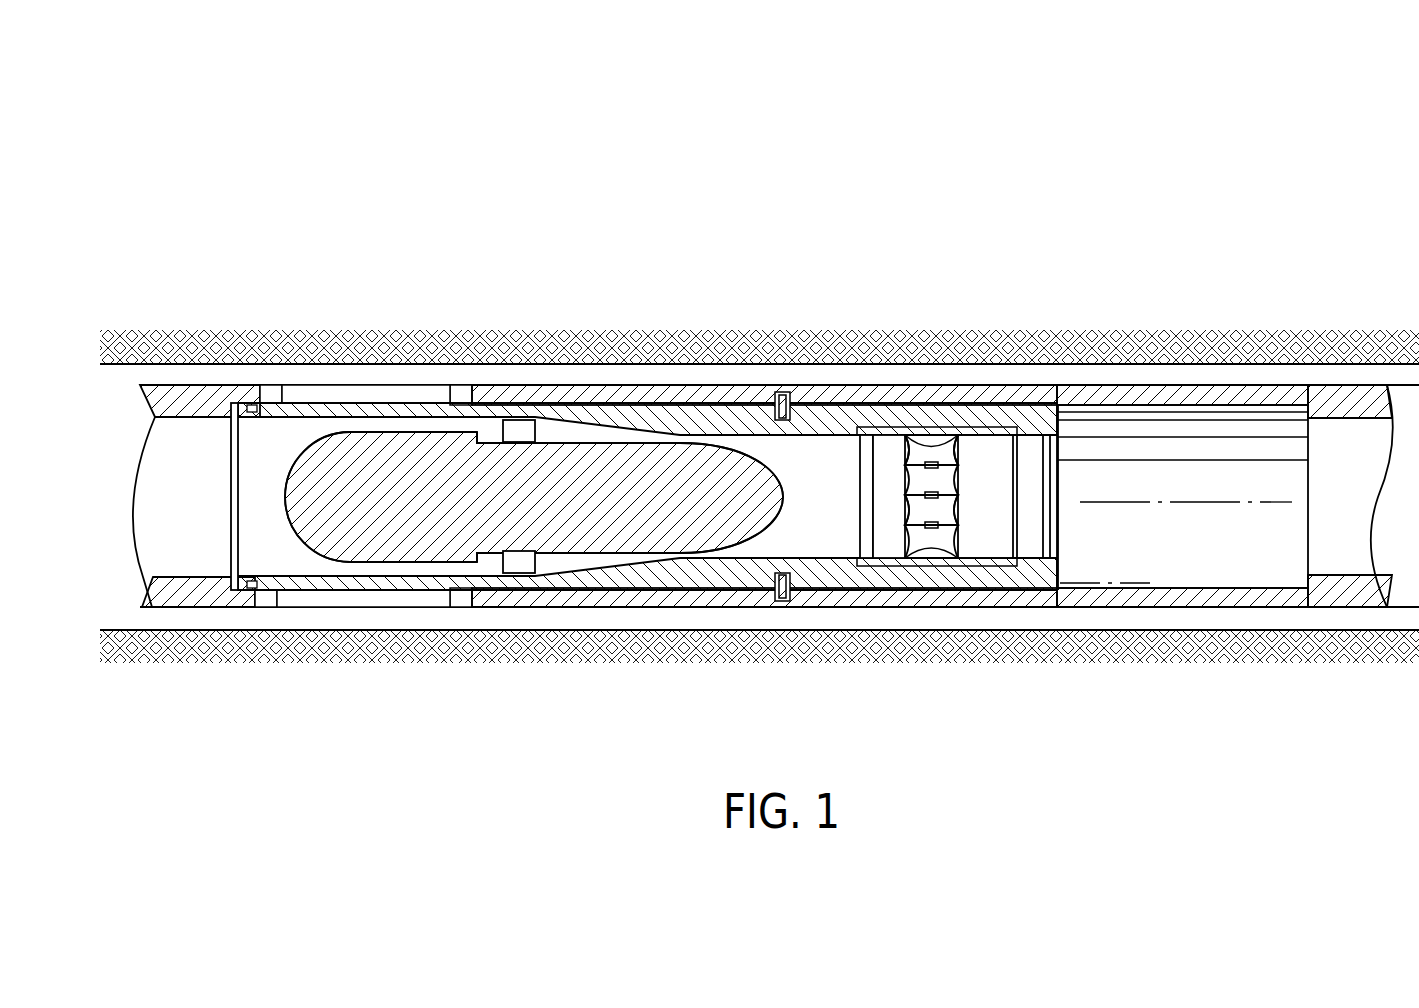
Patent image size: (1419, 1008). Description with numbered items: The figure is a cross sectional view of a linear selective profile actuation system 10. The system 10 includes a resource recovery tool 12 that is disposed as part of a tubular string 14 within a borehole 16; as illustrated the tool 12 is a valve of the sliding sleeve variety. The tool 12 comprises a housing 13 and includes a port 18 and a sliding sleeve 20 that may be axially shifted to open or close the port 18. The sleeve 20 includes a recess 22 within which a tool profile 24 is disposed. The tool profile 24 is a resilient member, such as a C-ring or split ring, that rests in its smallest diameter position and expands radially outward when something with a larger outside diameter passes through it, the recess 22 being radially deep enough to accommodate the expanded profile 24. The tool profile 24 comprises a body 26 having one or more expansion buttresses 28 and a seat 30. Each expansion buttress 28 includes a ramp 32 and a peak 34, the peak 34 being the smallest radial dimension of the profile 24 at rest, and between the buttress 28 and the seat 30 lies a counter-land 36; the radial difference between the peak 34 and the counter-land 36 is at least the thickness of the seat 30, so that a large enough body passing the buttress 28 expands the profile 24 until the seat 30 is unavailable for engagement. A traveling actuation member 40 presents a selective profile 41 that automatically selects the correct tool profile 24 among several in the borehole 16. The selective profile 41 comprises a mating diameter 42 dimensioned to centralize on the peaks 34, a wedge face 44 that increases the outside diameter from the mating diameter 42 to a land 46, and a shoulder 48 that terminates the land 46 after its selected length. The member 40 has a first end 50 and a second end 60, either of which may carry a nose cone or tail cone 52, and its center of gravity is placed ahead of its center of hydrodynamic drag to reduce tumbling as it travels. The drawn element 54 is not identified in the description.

The linear selective profile actuation system 10 is at (1150, 205).
The resource recovery tool 12 is at (1150, 378).
The housing 13 is at (1083, 392).
The tubular string 14 is at (1403, 386).
The borehole 16 is at (657, 363).
The port 18 is at (346, 397).
The sliding sleeve 20 is at (715, 412).
The recess 22 is at (928, 448).
The tool profile 24 is at (988, 420).
The body 26 is at (978, 565).
The expansion buttress 28 is at (943, 440).
The seat 30 is at (882, 566).
The ramp 32 is at (917, 530).
The peak 34 is at (937, 530).
The counter-land 36 is at (887, 450).
The traveling actuation member 40 is at (412, 525).
The selective profile 41 is at (525, 723).
The mating diameter 42 is at (548, 440).
The wedge face 44 is at (500, 431).
The land 46 is at (494, 566).
The shoulder 48 is at (468, 556).
The first end 50 is at (712, 530).
The nose cone or tail cone 52 is at (762, 566).
The piston head 54 is at (325, 556).
The second end 60 is at (312, 537).